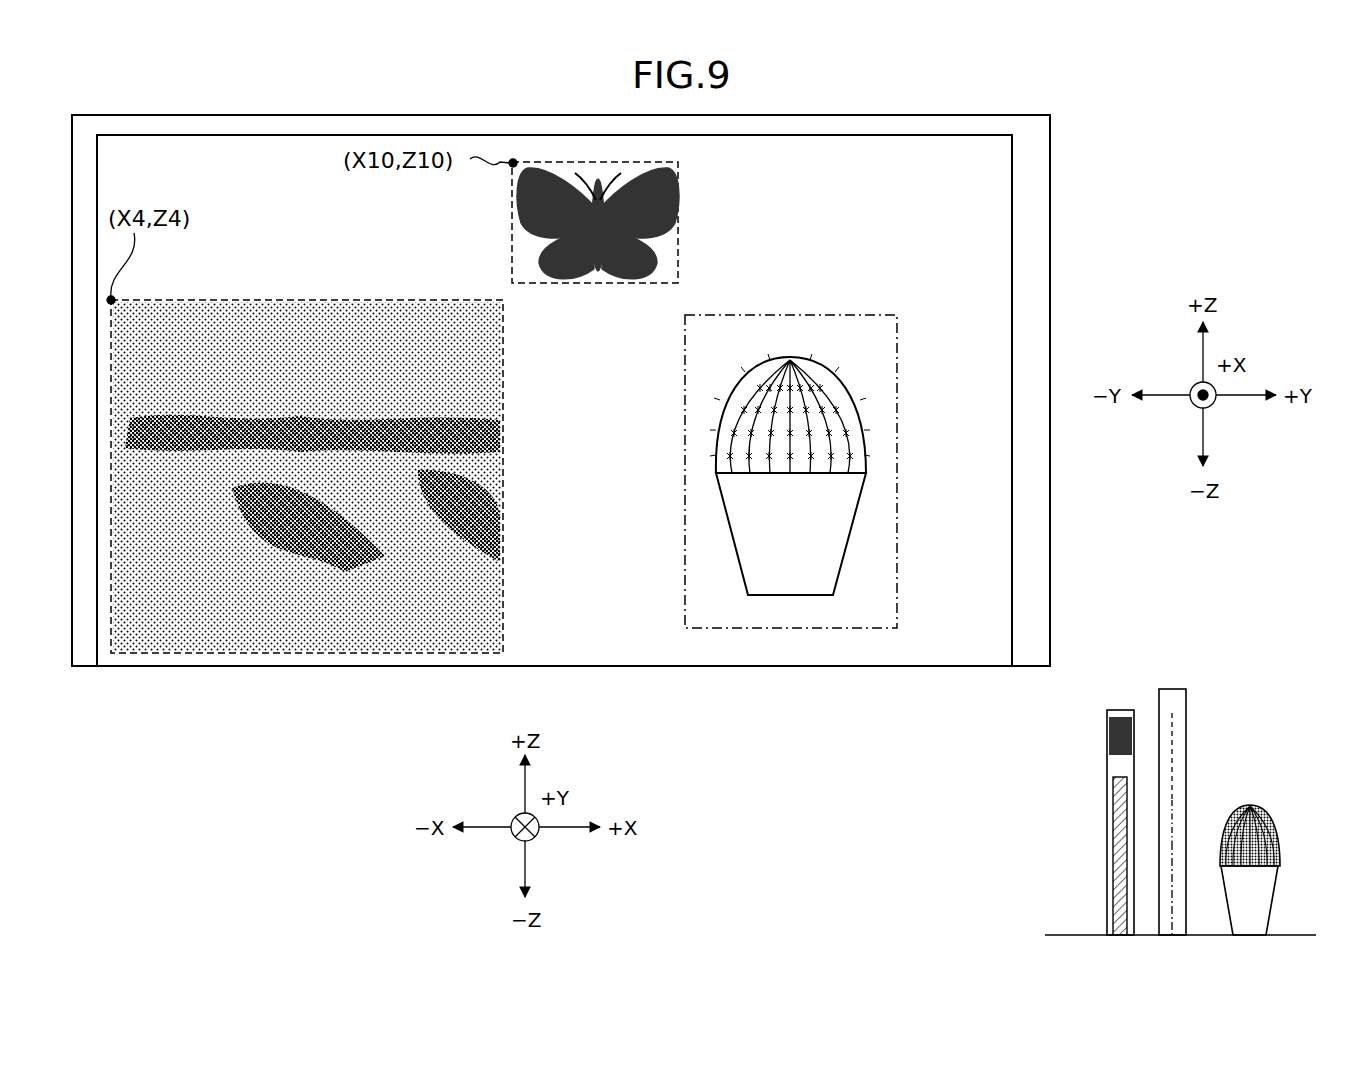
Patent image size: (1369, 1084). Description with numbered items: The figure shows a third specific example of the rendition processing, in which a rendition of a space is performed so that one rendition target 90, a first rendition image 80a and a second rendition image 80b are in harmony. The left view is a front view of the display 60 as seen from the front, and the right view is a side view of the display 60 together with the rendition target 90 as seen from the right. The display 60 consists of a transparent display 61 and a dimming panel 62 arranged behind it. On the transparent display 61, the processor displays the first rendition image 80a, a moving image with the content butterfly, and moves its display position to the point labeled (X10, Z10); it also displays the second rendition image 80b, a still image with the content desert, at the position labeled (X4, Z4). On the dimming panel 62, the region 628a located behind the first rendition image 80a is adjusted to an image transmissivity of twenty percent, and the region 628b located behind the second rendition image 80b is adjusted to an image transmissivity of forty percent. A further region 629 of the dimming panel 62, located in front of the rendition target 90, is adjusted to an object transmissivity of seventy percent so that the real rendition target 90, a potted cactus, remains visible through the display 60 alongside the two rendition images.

The display 60 is at (1147, 694).
The transparent display 61 is at (1006, 166).
The dimming panel 62 is at (1040, 212).
The first rendition image 80a is at (562, 278).
The second rendition image 80b is at (277, 560).
The rendition target 90 is at (795, 555).
The region 628a is at (612, 285).
The region 628b is at (352, 300).
The region 629 is at (830, 315).